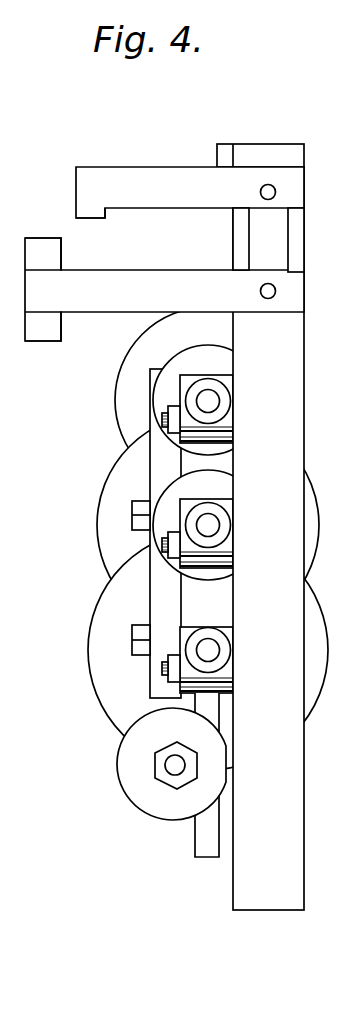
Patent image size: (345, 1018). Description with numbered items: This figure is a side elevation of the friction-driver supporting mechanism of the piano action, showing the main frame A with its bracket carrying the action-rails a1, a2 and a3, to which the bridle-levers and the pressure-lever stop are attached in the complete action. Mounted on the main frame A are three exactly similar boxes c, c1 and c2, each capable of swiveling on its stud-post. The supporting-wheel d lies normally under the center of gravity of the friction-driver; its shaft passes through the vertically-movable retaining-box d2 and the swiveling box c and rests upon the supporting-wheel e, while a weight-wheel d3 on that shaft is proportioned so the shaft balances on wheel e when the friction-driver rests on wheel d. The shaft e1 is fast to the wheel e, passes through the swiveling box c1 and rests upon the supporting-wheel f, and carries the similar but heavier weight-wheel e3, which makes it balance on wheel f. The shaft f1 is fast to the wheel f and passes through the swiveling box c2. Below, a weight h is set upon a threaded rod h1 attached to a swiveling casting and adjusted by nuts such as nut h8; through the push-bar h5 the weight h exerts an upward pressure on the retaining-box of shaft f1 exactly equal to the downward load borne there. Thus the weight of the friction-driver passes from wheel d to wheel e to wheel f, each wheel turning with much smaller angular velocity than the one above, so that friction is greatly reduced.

The main frame A is at (228, 527).
The action-rail a1 is at (43, 254).
The action-rail a2 is at (43, 326).
The action-rail a3 is at (80, 210).
The swiveling box c is at (181, 383).
The swiveling box c1 is at (171, 525).
The swiveling box c2 is at (186, 633).
The supporting-wheel d is at (208, 400).
The vertically-movable retaining-box d2 is at (216, 399).
The weight-wheel d3 is at (208, 400).
The supporting-wheel e is at (208, 525).
The shaft e1 is at (216, 524).
The weight-wheel e3 is at (208, 524).
The supporting-wheel f is at (208, 650).
The shaft f1 is at (216, 650).
The weight h is at (171, 764).
The rod h1 is at (171, 772).
The push-bar h5 is at (210, 710).
The nut h8 is at (192, 780).